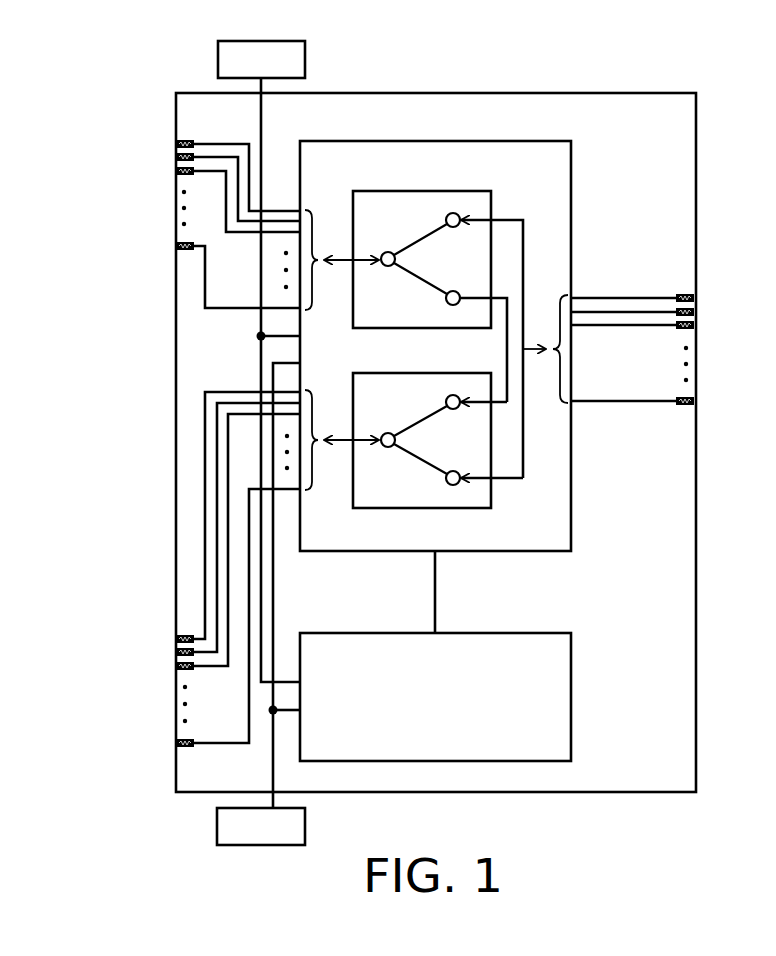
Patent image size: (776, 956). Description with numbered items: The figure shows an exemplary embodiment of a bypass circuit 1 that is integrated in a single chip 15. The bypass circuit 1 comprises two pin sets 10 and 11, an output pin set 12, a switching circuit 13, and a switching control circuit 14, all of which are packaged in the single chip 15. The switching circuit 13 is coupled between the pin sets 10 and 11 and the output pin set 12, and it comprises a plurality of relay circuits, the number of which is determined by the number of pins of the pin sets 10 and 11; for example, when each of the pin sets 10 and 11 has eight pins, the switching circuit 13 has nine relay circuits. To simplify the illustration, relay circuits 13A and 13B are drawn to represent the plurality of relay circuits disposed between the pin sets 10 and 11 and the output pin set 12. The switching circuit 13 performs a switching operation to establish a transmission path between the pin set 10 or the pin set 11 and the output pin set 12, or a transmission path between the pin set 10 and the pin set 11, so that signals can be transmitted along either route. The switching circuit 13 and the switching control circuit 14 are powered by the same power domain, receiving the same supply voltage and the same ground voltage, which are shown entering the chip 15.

The bypass circuit 1 is at (100, 84).
The pin set 10 is at (170, 140).
The pin set 11 is at (170, 633).
The output pin set 12 is at (700, 295).
The switching circuit 13 is at (300, 140).
The relay circuit 13A is at (353, 190).
The relay circuit 13B is at (353, 372).
The switching control circuit 14 is at (300, 632).
The chip 15 is at (437, 93).